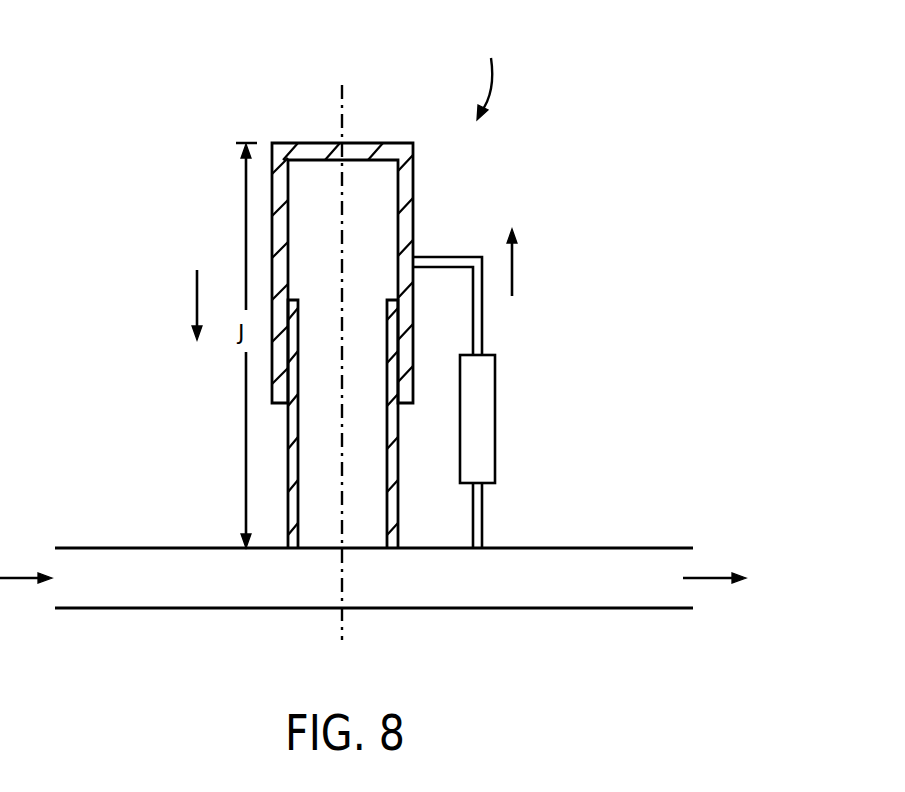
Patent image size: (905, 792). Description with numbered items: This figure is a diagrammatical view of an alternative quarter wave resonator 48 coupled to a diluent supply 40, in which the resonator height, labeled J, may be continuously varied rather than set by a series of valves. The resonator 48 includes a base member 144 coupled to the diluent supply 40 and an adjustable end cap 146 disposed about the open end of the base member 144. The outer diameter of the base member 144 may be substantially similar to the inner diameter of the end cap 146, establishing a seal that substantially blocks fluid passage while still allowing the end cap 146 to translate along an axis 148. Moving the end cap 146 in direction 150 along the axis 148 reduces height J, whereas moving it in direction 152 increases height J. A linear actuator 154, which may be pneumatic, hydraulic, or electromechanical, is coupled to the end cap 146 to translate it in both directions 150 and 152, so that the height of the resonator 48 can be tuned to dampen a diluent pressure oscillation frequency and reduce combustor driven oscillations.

The diluent supply 40 is at (613, 588).
The quarter wave resonator 48 is at (490, 73).
The base member 144 is at (399, 478).
The adjustable end cap 146 is at (367, 143).
The axis 148 is at (342, 107).
The direction 150 is at (193, 297).
The direction 152 is at (514, 269).
The linear actuator 154 is at (496, 420).